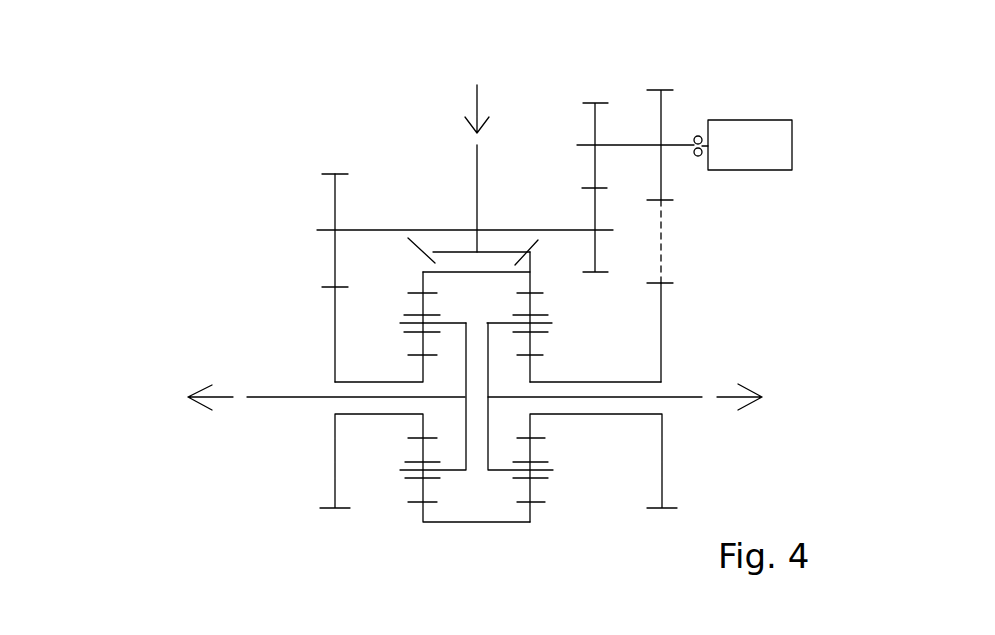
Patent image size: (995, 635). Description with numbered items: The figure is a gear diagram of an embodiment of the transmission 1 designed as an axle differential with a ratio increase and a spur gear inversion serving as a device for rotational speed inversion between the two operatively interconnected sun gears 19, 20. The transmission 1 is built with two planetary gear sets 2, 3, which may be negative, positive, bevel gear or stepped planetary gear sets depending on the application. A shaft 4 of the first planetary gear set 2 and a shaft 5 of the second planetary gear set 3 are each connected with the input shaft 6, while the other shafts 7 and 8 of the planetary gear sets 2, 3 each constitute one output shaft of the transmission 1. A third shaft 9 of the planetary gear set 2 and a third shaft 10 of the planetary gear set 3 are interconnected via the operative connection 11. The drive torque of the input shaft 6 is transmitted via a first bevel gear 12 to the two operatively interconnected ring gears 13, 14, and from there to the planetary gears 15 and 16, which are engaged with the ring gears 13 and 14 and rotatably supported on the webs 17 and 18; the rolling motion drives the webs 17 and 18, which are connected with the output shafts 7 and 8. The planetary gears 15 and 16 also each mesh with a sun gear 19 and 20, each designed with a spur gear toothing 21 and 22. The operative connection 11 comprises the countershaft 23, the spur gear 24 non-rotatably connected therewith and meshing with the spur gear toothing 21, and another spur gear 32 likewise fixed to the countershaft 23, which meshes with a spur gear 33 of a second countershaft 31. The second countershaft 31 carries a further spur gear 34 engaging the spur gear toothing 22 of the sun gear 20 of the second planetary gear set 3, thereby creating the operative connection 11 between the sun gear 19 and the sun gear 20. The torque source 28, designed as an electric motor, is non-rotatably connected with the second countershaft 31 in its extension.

The transmission 1 is at (113, 257).
The planetary gear set 2 is at (311, 333).
The planetary gear set 3 is at (684, 328).
The shaft 4 is at (408, 272).
The shaft 5 is at (542, 254).
The input shaft 6 is at (475, 165).
The output shaft 7 is at (277, 398).
The output shaft 8 is at (683, 397).
The third shaft 9 is at (405, 368).
The third shaft 10 is at (550, 367).
The operative connection 11 is at (419, 188).
The bevel gear 12 is at (497, 250).
The ring gear 13 is at (422, 288).
The ring gear 14 is at (532, 285).
The planetary gear 15 is at (348, 287).
The planetary gear 16 is at (533, 305).
The web 17 is at (457, 472).
The web 18 is at (502, 472).
The sun gear 19 is at (422, 370).
The sun gear 20 is at (530, 372).
The spur gear toothing 21 is at (407, 313).
The spur gear toothing 22 is at (650, 283).
The countershaft 23 is at (320, 230).
The spur gear 24 is at (323, 176).
The torque source 28 is at (805, 152).
The second countershaft 31 is at (678, 143).
The spur gear 32 is at (596, 208).
The spur gear 33 is at (593, 125).
The spur gear 34 is at (667, 112).